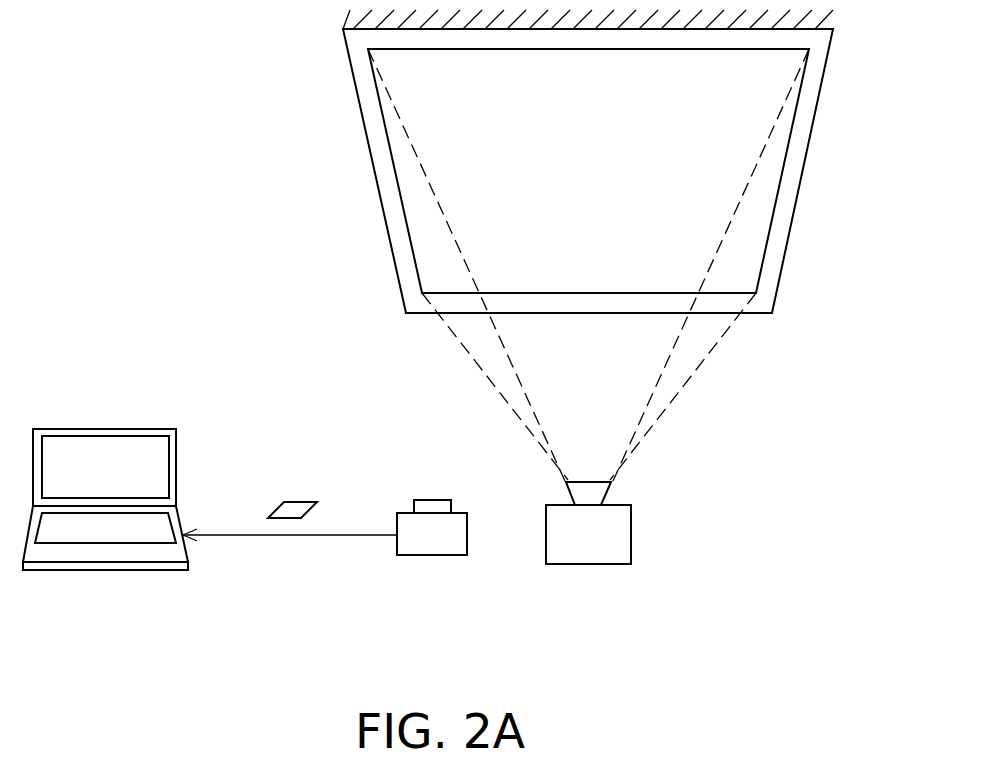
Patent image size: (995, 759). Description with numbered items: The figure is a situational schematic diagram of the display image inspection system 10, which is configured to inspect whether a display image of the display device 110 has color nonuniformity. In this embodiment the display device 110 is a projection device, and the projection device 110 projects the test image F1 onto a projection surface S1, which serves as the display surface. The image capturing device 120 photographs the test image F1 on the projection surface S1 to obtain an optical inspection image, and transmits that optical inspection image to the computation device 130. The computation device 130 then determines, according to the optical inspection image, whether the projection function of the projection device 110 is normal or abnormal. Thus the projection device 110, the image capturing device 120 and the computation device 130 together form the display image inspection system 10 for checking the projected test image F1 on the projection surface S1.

The display image inspection system 10 is at (753, 664).
The display device 110 is at (593, 565).
The image capturing device 120 is at (428, 556).
The computation device 130 is at (103, 428).
The projection surface S1 is at (803, 83).
The test image F1 is at (783, 168).